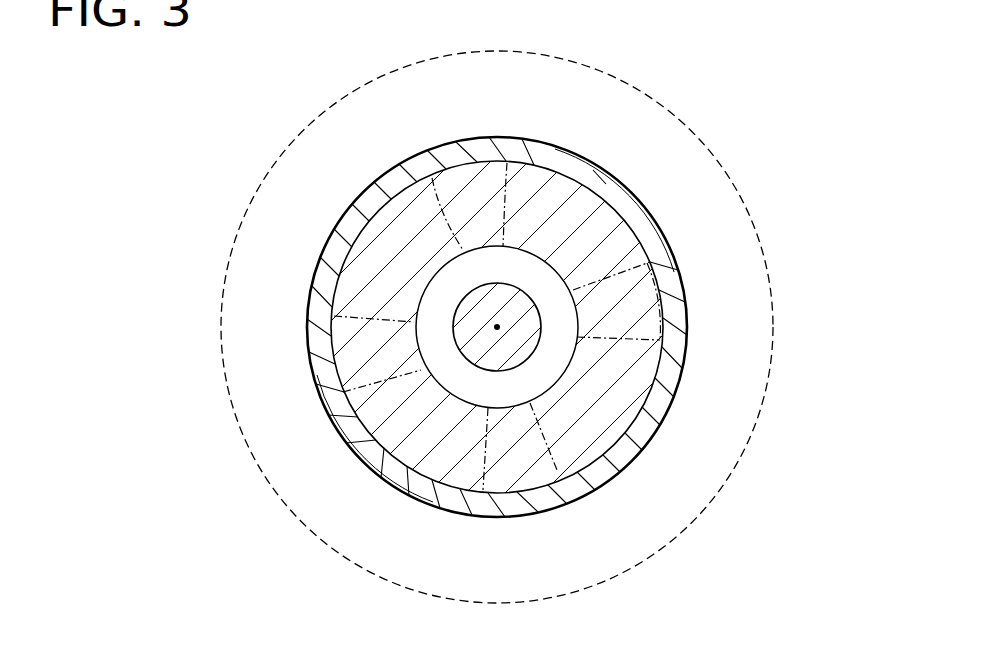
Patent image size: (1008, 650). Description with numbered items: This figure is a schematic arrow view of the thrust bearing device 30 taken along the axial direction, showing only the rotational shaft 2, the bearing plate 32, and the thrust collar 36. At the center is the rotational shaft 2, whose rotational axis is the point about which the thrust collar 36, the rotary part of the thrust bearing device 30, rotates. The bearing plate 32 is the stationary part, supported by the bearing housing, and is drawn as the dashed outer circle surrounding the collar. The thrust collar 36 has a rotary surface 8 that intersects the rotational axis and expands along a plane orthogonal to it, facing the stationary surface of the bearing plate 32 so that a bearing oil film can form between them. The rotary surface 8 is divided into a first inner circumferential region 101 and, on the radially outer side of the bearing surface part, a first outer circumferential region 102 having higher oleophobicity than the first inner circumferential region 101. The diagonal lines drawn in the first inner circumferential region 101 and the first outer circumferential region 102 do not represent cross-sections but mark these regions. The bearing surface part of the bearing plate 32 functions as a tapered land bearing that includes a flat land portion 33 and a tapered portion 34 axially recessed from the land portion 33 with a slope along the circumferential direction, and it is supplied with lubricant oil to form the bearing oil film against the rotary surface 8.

The thrust bearing device 30 is at (803, 75).
The bearing plate 32 is at (673, 130).
The rotary surface 8 is at (657, 215).
The tapered portion 34 is at (375, 458).
The thrust collar 36 is at (680, 283).
The first outer circumferential region 102 is at (493, 138).
The first inner circumferential region 101 is at (585, 241).
The land portion 33 is at (513, 470).
The rotational shaft 2 is at (496, 382).